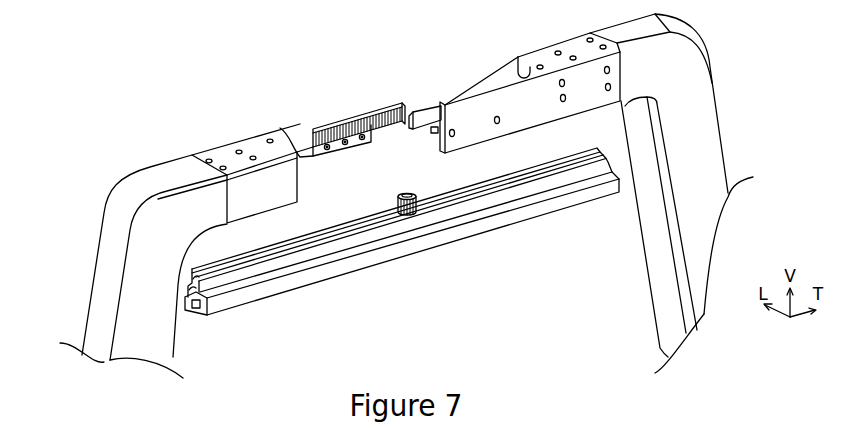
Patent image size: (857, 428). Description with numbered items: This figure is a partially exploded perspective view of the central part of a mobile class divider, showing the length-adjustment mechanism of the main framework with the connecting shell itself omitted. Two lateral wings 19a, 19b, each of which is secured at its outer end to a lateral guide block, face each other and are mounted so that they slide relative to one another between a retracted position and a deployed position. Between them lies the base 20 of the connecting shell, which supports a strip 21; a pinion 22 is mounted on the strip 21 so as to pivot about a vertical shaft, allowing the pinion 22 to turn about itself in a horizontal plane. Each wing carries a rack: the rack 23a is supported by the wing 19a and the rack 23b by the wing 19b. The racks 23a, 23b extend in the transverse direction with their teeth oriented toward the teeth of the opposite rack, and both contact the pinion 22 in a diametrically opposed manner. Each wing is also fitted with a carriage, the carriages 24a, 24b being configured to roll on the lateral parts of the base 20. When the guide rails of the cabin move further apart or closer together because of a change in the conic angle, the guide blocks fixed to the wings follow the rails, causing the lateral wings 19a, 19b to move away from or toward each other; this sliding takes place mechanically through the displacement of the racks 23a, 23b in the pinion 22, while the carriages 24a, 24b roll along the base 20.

The lateral wing 19a is at (104, 270).
The lateral wing 19b is at (700, 142).
The base 20 is at (428, 247).
The strip 21 is at (500, 202).
The pinion 22 is at (397, 193).
The rack 23a is at (370, 128).
The rack 23b is at (418, 113).
The carriage 24a is at (313, 148).
The carriage 24b is at (433, 128).